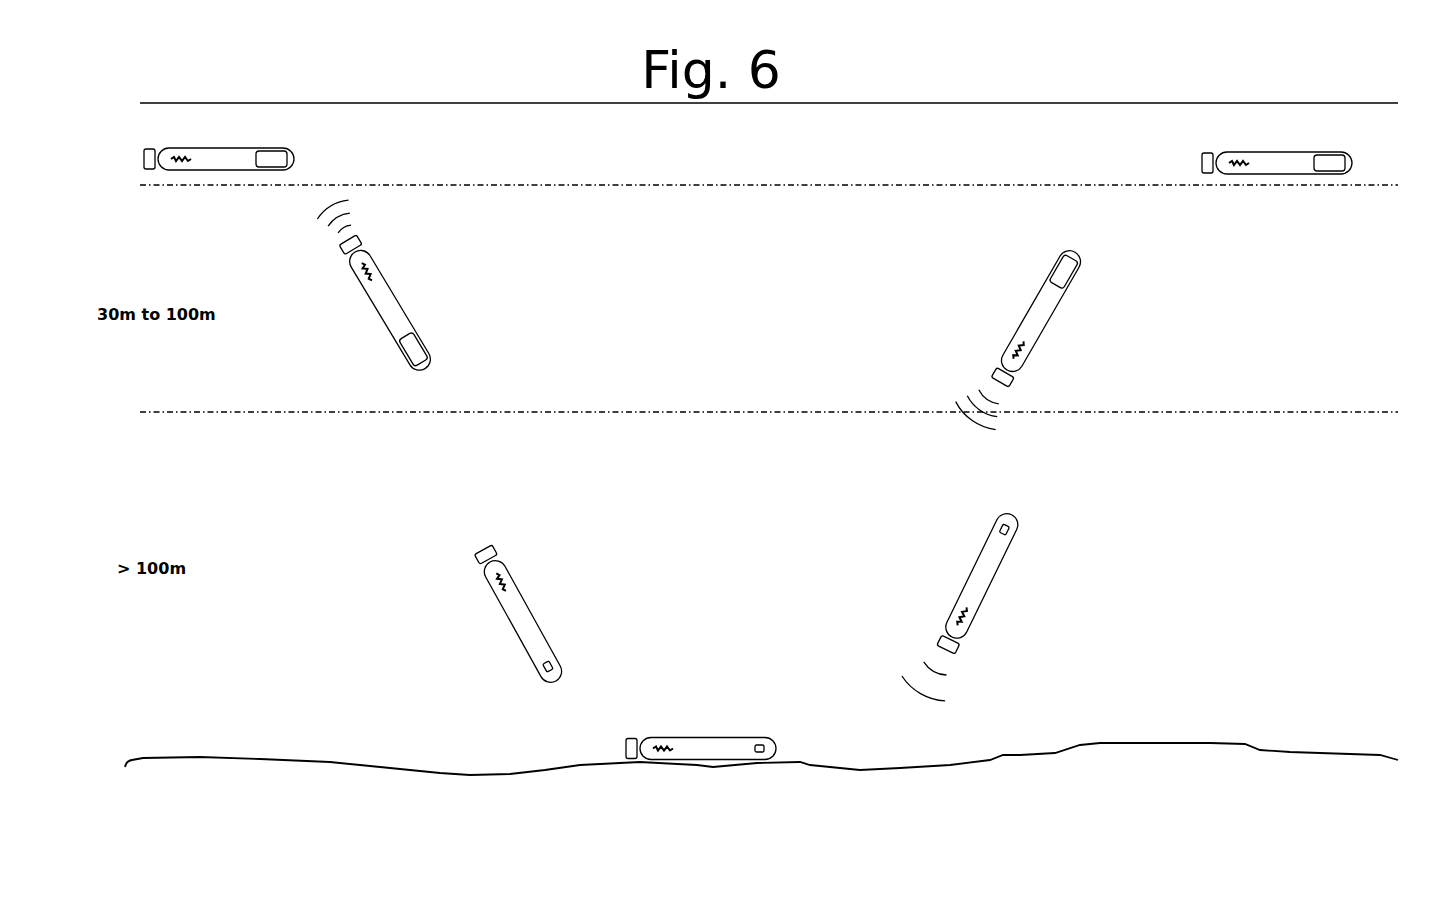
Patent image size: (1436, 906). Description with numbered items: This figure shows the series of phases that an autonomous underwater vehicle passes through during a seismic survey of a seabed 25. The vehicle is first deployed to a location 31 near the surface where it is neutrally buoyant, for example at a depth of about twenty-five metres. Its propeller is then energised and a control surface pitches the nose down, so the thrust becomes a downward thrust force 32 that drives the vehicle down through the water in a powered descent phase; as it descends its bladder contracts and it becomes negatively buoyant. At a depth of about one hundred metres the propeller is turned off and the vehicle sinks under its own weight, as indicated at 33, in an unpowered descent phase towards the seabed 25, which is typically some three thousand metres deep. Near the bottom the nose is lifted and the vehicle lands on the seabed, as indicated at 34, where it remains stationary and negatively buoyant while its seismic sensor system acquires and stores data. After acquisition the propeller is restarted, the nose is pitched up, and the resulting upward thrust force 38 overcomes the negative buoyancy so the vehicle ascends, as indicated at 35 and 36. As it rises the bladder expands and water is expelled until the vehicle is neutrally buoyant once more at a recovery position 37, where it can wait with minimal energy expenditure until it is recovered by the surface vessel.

The seabed 25 is at (332, 762).
The deployment location 31 is at (219, 149).
The downward thrust force 32 is at (353, 287).
The unpowered descent 33 is at (520, 615).
The landing on the seabed 34 is at (701, 736).
The ascent of the AUV 35 is at (979, 582).
The ascent of the AUV 36 is at (1020, 338).
The recovery position 37 is at (1277, 152).
The upward thrust force 38 is at (925, 667).